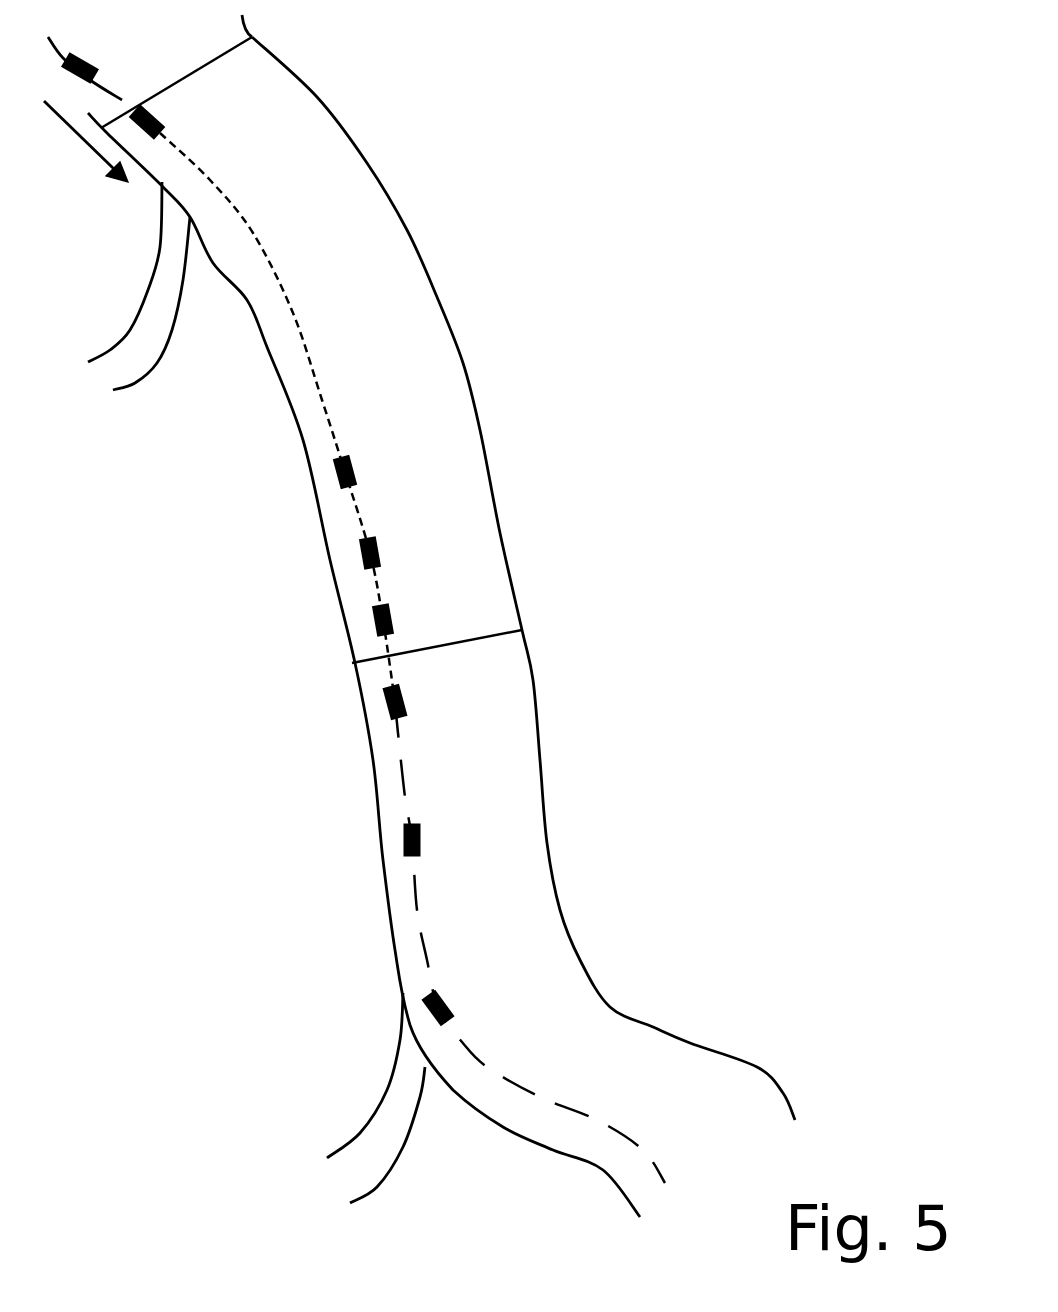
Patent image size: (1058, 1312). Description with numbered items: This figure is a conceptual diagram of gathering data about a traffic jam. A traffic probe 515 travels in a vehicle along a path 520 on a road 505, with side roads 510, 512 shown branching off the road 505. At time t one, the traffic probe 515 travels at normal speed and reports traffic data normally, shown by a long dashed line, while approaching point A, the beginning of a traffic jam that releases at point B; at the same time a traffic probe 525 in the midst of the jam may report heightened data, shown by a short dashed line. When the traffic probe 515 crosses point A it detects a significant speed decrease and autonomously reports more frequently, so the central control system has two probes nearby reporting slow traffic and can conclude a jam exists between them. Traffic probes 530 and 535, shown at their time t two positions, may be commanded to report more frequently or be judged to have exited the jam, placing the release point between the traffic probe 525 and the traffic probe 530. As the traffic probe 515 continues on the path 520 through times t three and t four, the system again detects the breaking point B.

The road 505 is at (477, 487).
The side branch 510 is at (160, 365).
The side branch 512 is at (408, 1140).
The traffic probe 515 is at (87, 65).
The path 520 is at (193, 163).
The traffic probe 525 is at (350, 462).
The traffic probe 530 is at (418, 832).
The traffic probe 535 is at (447, 1000).